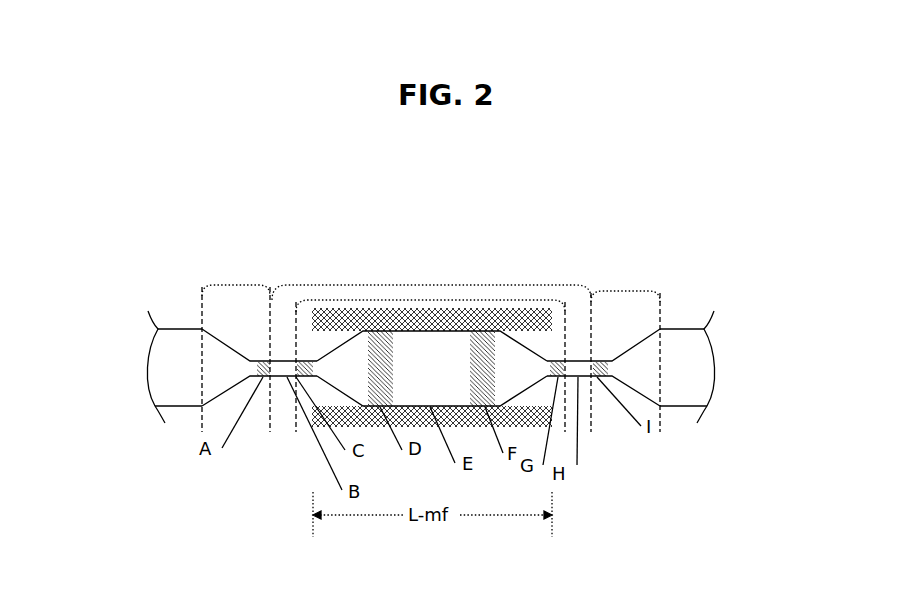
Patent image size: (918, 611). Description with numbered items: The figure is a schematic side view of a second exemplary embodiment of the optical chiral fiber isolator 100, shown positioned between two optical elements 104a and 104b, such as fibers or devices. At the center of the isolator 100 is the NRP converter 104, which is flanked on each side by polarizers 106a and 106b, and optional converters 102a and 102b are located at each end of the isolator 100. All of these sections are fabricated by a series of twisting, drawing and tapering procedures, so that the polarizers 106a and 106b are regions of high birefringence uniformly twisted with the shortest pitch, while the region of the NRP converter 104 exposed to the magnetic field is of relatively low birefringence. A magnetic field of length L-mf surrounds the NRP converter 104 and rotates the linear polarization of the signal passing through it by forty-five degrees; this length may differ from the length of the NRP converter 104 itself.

The optical chiral fiber isolator 100 is at (436, 283).
The converter 102a is at (240, 283).
The converter 102b is at (627, 289).
The NRP converter 104 is at (437, 290).
The optical element 104a is at (185, 329).
The fiber element 104b is at (693, 327).
The polarizer 106a is at (282, 377).
The polarizer 106b is at (586, 377).